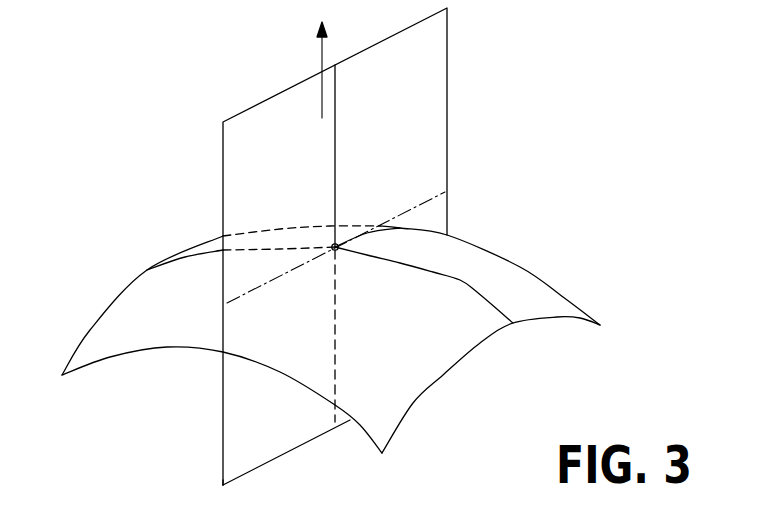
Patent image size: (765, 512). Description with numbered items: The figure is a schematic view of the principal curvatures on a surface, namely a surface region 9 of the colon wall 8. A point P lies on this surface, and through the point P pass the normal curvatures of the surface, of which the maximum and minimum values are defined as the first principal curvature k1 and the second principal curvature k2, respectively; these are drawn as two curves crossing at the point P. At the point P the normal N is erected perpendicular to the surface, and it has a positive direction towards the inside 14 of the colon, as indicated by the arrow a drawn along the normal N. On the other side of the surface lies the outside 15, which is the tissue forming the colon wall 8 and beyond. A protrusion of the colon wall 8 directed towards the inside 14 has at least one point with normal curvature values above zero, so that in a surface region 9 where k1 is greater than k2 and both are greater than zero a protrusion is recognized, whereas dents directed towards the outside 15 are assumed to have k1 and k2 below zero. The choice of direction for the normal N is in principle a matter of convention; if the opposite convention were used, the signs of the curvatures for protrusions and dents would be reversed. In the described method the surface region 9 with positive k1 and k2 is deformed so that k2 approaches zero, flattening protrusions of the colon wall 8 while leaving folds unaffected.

The colon wall 8 is at (417, 355).
The surface region 9 is at (388, 388).
The inside of the colon 14 is at (182, 211).
The outside 15 is at (182, 455).
The normal N is at (337, 126).
The point P is at (332, 243).
The arrow a is at (319, 51).
The first principal curvature k1 is at (430, 230).
The second principal curvature k2 is at (477, 292).